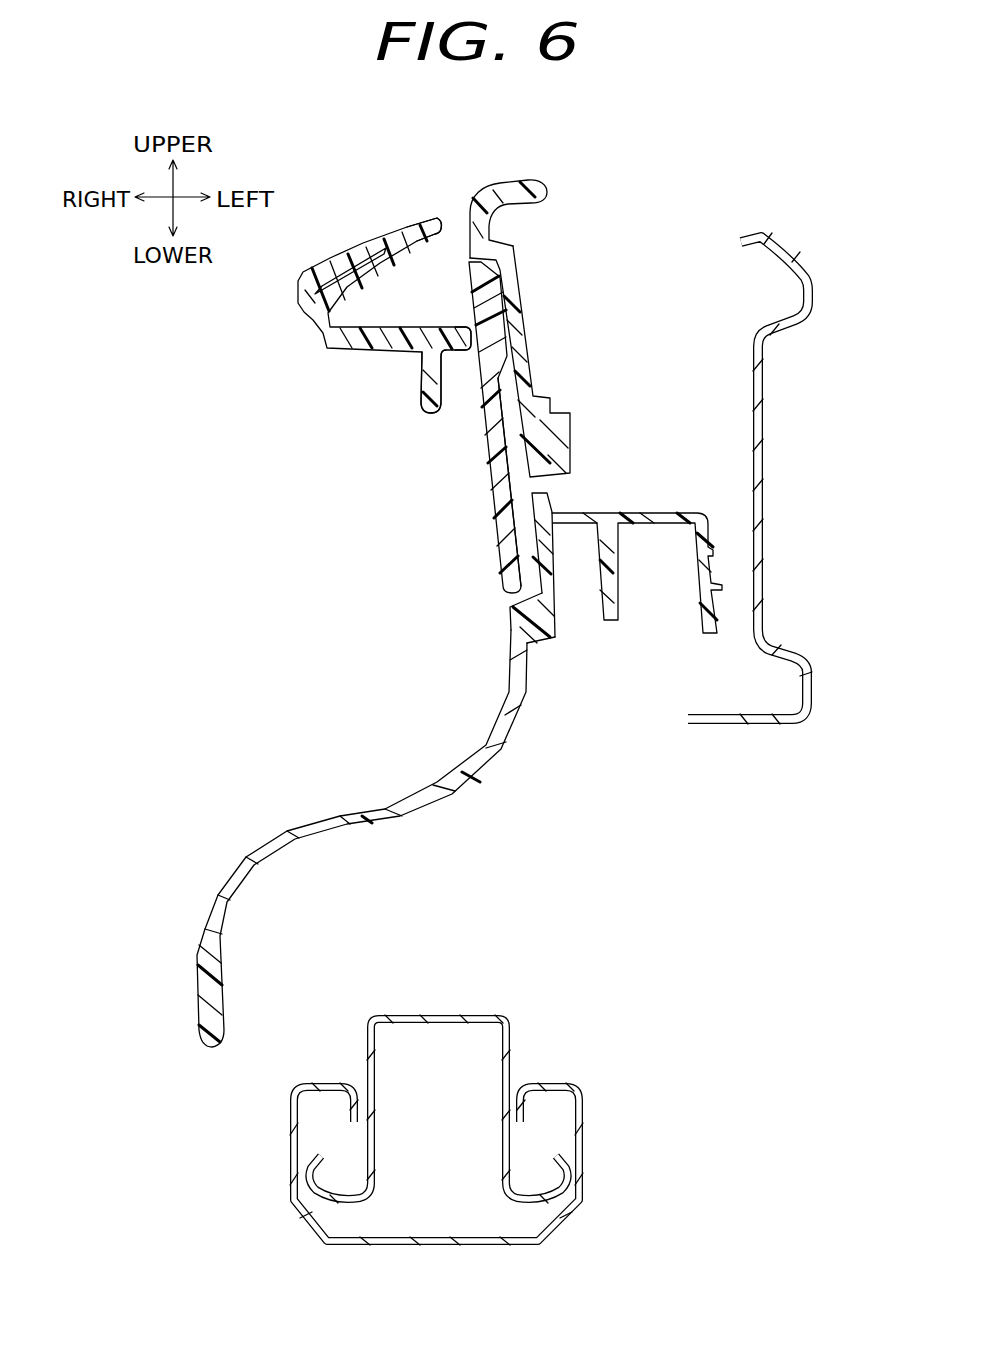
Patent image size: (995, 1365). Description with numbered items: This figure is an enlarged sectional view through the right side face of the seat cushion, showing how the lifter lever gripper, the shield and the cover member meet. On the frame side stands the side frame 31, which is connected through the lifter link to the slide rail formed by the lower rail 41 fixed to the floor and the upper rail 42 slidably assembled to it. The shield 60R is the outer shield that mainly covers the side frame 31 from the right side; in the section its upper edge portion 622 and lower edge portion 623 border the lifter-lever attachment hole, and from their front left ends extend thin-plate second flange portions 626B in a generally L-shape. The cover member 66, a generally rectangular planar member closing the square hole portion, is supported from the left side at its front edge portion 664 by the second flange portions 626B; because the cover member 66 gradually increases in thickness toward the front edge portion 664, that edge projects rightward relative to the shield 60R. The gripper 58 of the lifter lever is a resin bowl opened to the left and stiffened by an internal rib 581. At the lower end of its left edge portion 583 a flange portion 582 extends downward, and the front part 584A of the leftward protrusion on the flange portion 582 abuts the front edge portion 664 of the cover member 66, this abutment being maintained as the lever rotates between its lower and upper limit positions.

The side frame 31 is at (765, 481).
The lower rail 41 is at (586, 1138).
The upper rail 42 is at (441, 1012).
The gripper 58 is at (320, 323).
The rib 581 is at (360, 276).
The flange portion 582 is at (423, 384).
The left edge portion 583 is at (441, 214).
The front part of the protrusion 584A is at (470, 329).
The shield 60R is at (347, 816).
The upper edge portion 622 is at (492, 236).
The lower edge portion 623 is at (527, 630).
The second flange portion 626B is at (516, 293).
The cover member 66 is at (490, 446).
The front edge portion 664 is at (497, 476).